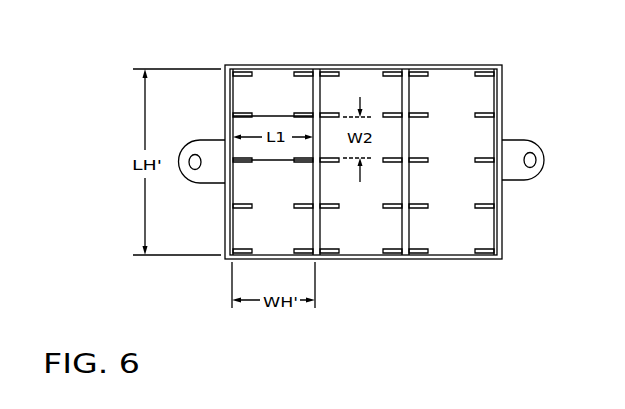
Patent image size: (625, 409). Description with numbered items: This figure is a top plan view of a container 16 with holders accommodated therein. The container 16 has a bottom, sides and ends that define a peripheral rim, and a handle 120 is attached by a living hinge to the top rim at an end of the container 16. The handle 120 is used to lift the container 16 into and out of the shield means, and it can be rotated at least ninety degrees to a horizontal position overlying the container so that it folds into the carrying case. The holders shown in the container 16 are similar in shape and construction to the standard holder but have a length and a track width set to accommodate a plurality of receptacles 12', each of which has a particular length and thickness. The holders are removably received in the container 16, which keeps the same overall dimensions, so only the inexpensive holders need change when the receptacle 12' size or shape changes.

The receptacle 12' is at (267, 67).
The container 16 is at (505, 78).
The handle 120 is at (538, 150).